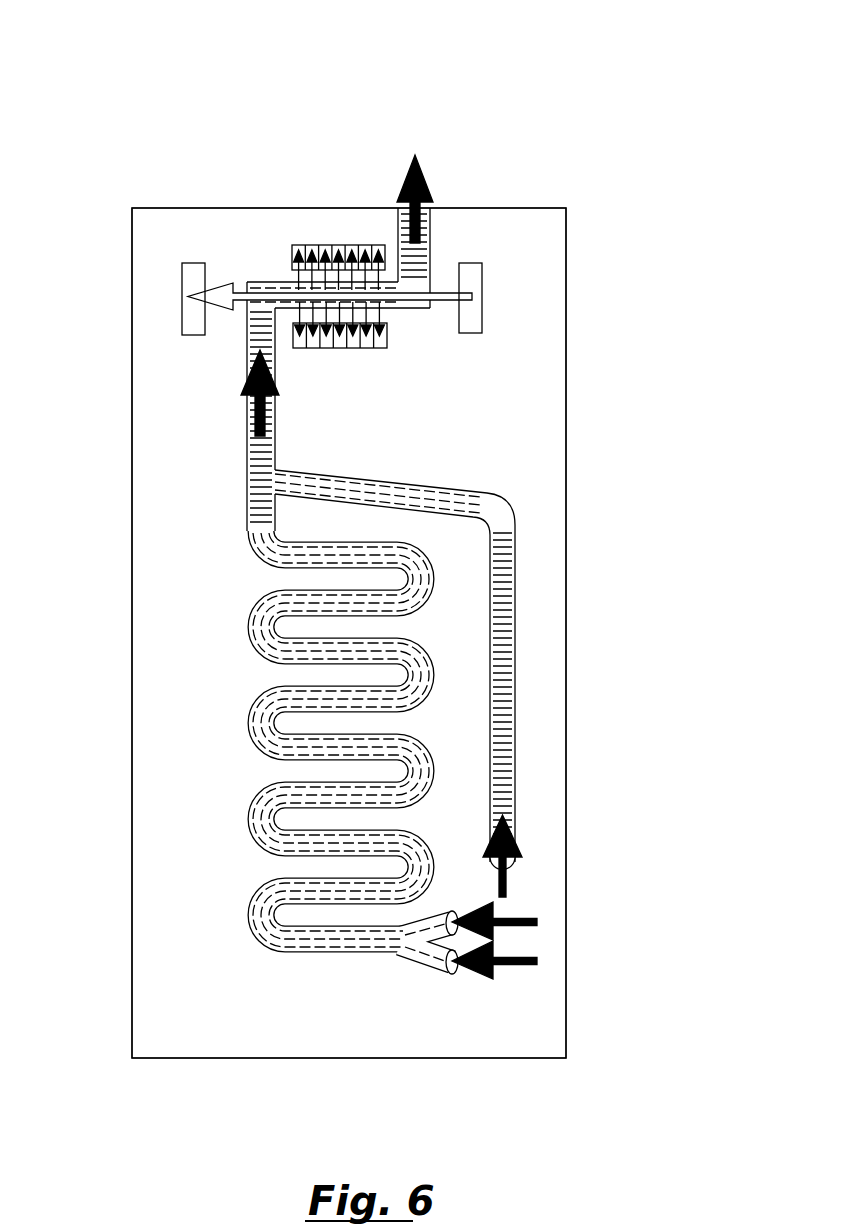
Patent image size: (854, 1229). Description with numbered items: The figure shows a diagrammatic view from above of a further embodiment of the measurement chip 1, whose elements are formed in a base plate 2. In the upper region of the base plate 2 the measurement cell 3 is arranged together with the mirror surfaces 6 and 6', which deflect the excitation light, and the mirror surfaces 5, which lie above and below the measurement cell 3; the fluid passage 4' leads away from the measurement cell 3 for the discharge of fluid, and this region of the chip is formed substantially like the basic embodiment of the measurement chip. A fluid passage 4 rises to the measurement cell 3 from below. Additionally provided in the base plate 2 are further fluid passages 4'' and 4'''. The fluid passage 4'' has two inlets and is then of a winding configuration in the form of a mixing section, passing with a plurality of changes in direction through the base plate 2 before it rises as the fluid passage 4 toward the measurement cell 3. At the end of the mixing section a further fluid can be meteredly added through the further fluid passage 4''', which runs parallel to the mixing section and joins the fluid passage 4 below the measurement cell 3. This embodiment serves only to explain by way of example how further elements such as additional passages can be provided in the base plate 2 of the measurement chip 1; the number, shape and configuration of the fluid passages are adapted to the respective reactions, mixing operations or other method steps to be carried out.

The measurement chip 1 is at (584, 112).
The base plate 2 is at (532, 420).
The measurement cell 3 is at (303, 303).
The fluid passage 4 is at (168, 406).
The fluid passage for the discharge of fluid 4' is at (456, 196).
The fluid passage with mixing section 4'' is at (256, 778).
The further fluid passage 4''' is at (491, 683).
The mirror surfaces 5 is at (324, 257).
The mirror surface for deflection of the excitation light 6 is at (561, 264).
The mirror surface for deflection of the excitation light 6' is at (135, 217).